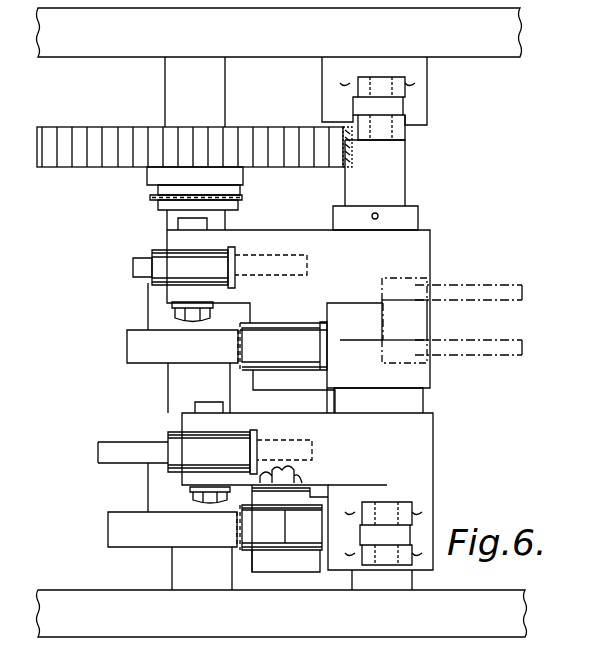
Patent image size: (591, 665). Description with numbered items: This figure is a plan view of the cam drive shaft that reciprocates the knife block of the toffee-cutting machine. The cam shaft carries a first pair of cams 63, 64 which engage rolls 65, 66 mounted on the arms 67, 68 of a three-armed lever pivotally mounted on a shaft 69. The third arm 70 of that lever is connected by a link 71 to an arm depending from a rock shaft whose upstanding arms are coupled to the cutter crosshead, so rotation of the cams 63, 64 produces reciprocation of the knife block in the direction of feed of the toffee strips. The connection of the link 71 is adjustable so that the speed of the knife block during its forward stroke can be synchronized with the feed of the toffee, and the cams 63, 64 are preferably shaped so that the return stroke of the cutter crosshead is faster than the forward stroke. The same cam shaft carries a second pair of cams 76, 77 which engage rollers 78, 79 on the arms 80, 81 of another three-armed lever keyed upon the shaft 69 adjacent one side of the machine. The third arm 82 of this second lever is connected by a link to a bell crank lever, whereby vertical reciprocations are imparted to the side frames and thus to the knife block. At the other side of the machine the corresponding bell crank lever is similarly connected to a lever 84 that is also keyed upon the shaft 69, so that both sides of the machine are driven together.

The cam 63 is at (127, 353).
The cam 64 is at (128, 263).
The roll 65 is at (290, 300).
The roll 66 is at (167, 265).
The arm 67 is at (312, 385).
The arm 68 is at (247, 240).
The shaft 69 is at (357, 191).
The third arm 70 is at (402, 313).
The link 71 is at (463, 347).
The cam 76 is at (120, 547).
The cam 77 is at (110, 455).
The roller 78 is at (252, 552).
The roller 79 is at (172, 447).
The arm 80 is at (305, 565).
The arm 81 is at (297, 423).
The third arm 82 is at (368, 513).
The lever 84 is at (365, 125).